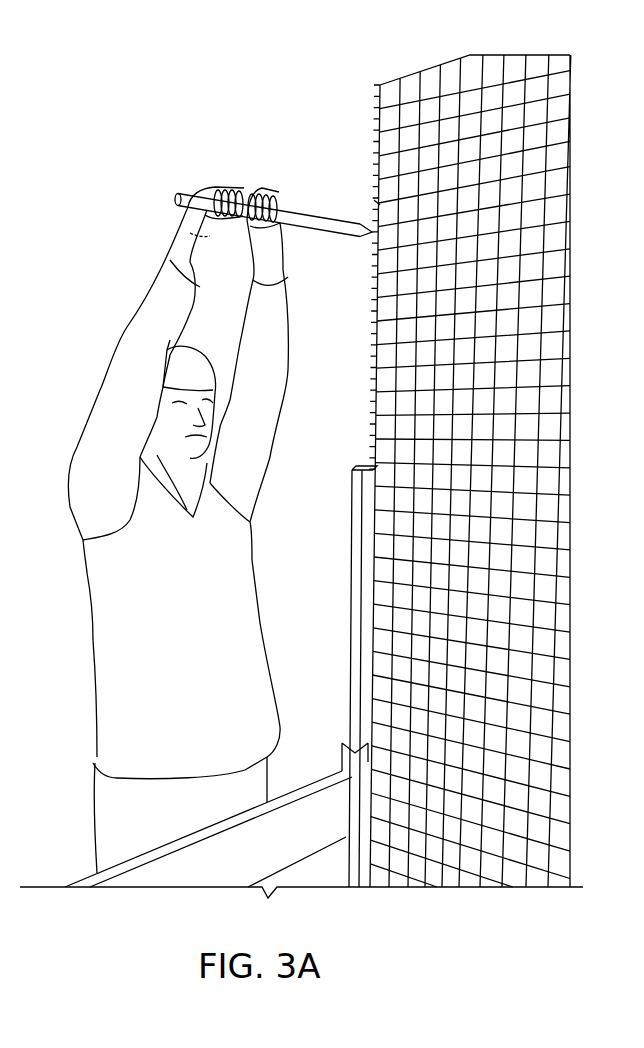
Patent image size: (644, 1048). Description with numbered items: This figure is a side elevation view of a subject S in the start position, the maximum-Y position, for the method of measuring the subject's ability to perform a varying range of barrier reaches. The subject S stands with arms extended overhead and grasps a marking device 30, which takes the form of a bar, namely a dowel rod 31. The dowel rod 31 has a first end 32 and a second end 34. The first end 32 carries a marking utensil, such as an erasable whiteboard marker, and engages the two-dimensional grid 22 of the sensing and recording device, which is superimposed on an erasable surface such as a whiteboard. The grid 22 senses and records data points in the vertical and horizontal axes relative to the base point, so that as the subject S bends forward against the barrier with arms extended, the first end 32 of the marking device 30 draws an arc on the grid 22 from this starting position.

The two-dimensional grid 22 is at (472, 175).
The marking device 30 is at (146, 128).
The dowel rod 31 is at (287, 213).
The first end 32 is at (377, 203).
The second end 34 is at (175, 193).
The subject S is at (83, 386).